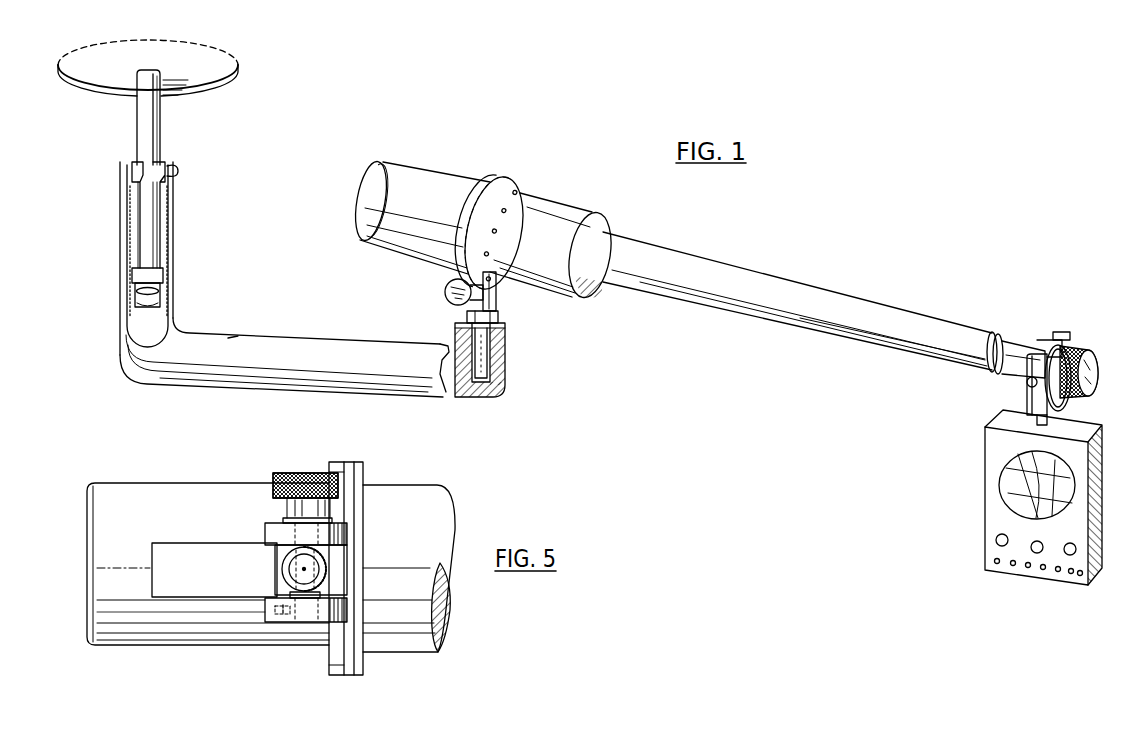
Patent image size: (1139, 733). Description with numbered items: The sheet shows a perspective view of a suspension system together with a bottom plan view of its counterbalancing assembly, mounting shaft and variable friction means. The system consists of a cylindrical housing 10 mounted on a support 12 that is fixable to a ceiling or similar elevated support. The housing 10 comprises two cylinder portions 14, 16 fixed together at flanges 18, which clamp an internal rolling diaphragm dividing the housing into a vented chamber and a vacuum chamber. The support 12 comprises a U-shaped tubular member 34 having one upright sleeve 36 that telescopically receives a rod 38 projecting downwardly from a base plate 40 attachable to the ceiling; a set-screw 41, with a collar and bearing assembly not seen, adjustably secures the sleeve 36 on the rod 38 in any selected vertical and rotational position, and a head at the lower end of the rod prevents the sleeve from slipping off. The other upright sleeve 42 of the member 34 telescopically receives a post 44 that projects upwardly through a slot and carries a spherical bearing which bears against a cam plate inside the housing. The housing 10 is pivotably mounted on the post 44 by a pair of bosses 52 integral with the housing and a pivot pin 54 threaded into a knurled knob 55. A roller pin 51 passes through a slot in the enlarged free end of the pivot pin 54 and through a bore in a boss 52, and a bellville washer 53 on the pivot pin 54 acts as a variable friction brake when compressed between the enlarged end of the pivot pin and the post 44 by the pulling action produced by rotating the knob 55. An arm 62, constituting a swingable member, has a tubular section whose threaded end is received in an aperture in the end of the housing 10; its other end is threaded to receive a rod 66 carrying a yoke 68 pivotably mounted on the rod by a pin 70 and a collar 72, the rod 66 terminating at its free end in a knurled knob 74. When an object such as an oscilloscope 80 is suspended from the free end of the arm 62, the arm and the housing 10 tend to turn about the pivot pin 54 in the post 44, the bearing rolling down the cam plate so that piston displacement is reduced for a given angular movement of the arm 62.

In FIG. 1, the cylindrical housing 10 is at (446, 165).
In FIG. 5, the cylindrical housing 10 is at (400, 476).
In FIG. 1, the support 12 is at (278, 333).
In FIG. 1, the cylinder portion 14 is at (405, 166).
In FIG. 5, the cylinder portion 14 is at (141, 487).
In FIG. 1, the cylinder portion 16 is at (559, 204).
In FIG. 5, the cylinder portion 16 is at (425, 487).
In FIG. 1, the flanges 18 is at (514, 182).
In FIG. 5, the flanges 18 is at (364, 470).
In FIG. 1, the U-shaped tubular member 34 is at (228, 338).
In FIG. 1, the upright sleeve 36 is at (170, 236).
In FIG. 1, the rod 38 is at (161, 121).
In FIG. 1, the base plate 40 is at (236, 86).
In FIG. 1, the set-screw 41 is at (176, 168).
In FIG. 1, the upright sleeve 42 is at (506, 362).
In FIG. 1, the post 44 is at (497, 308).
In FIG. 5, the post 44 is at (288, 566).
In FIG. 5, the roller pin 51 is at (283, 606).
In FIG. 1, the bosses 52 is at (467, 313).
In FIG. 5, the bosses 52 is at (265, 527).
In FIG. 5, the bellville washer 53 is at (290, 595).
In FIG. 5, the pivot pin 54 is at (290, 530).
In FIG. 1, the knurled knob 55 is at (445, 294).
In FIG. 5, the knurled knob 55 is at (284, 473).
In FIG. 1, the arm 62 is at (806, 288).
In FIG. 1, the rod 66 is at (1021, 341).
In FIG. 1, the yoke 68 is at (1070, 402).
In FIG. 1, the pin 70 is at (1026, 384).
In FIG. 1, the collar 72 is at (1045, 340).
In FIG. 1, the knurled knob 74 is at (1078, 347).
In FIG. 1, the oscilloscope 80 is at (992, 441).